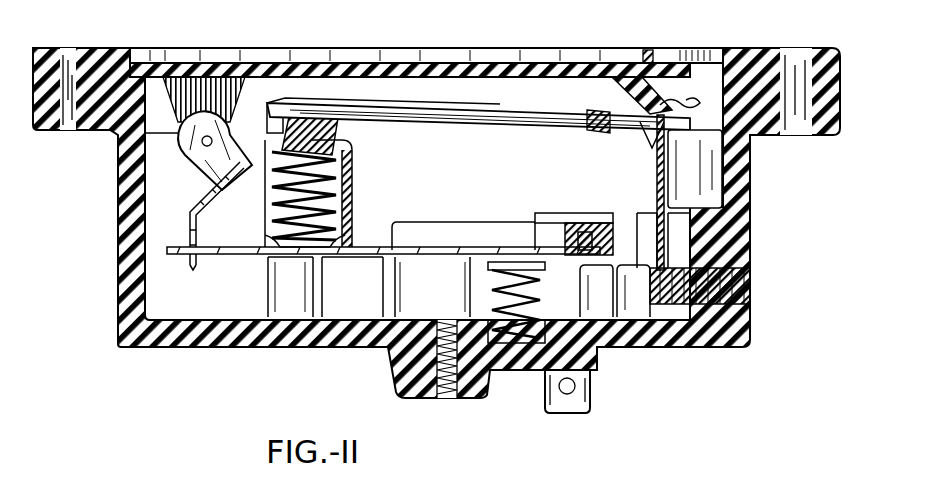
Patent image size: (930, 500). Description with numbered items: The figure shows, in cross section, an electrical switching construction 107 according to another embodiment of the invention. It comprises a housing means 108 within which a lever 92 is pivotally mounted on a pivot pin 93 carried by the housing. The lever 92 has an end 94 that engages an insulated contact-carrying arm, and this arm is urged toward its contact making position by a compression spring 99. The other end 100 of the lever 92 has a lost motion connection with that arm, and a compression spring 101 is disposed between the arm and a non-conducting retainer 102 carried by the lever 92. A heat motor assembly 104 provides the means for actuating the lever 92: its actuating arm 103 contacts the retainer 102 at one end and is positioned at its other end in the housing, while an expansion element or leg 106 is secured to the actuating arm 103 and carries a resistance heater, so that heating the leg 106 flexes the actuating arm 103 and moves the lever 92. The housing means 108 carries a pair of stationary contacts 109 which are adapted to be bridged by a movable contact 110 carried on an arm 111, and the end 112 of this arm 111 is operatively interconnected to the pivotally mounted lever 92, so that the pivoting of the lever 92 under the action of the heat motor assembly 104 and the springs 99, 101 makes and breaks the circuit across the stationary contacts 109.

The lever 92 is at (218, 192).
The pivot pin 93 is at (205, 145).
The end of lever 94 is at (192, 270).
The compression spring 99 is at (540, 292).
The other end of lever 100 is at (352, 207).
The compression spring 101 is at (328, 196).
The retainer 102 is at (340, 140).
The actuating arm 103 is at (305, 102).
The heat motor assembly 104 is at (505, 133).
The expansion element or leg 106 is at (455, 118).
The electrical switching construction 107 is at (540, 34).
The housing means 108 is at (755, 78).
The stationary contacts 109 is at (583, 222).
The movable contact 110 is at (565, 230).
The arm 111 is at (412, 247).
The end of arm 112 is at (172, 255).